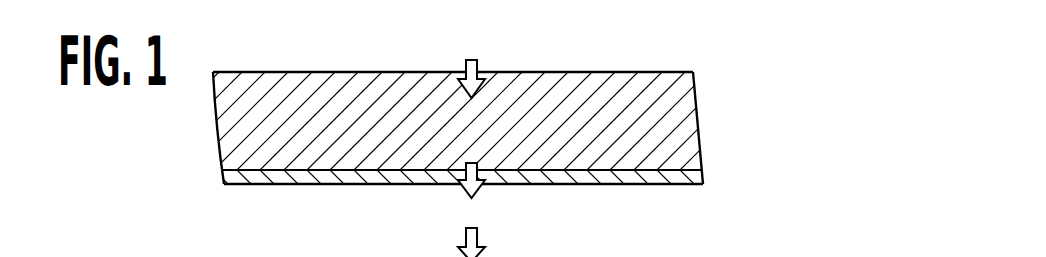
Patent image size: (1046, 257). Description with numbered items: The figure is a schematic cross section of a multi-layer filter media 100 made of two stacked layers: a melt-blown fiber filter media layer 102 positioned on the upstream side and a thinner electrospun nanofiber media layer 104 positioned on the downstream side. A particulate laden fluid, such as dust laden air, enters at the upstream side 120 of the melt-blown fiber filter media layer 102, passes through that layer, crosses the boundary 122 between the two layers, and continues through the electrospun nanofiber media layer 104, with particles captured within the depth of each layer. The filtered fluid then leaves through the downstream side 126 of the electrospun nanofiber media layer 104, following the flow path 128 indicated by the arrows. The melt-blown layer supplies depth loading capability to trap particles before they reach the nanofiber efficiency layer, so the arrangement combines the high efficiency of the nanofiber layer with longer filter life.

The multi-layer filter media 100 is at (447, 128).
The melt-blown fiber filter media layer 102 is at (683, 105).
The electrospun nanofiber media layer 104 is at (693, 180).
The upstream side 120 is at (650, 72).
The interface 122 is at (643, 170).
The downstream side 126 is at (648, 185).
The flow path 128 is at (475, 58).